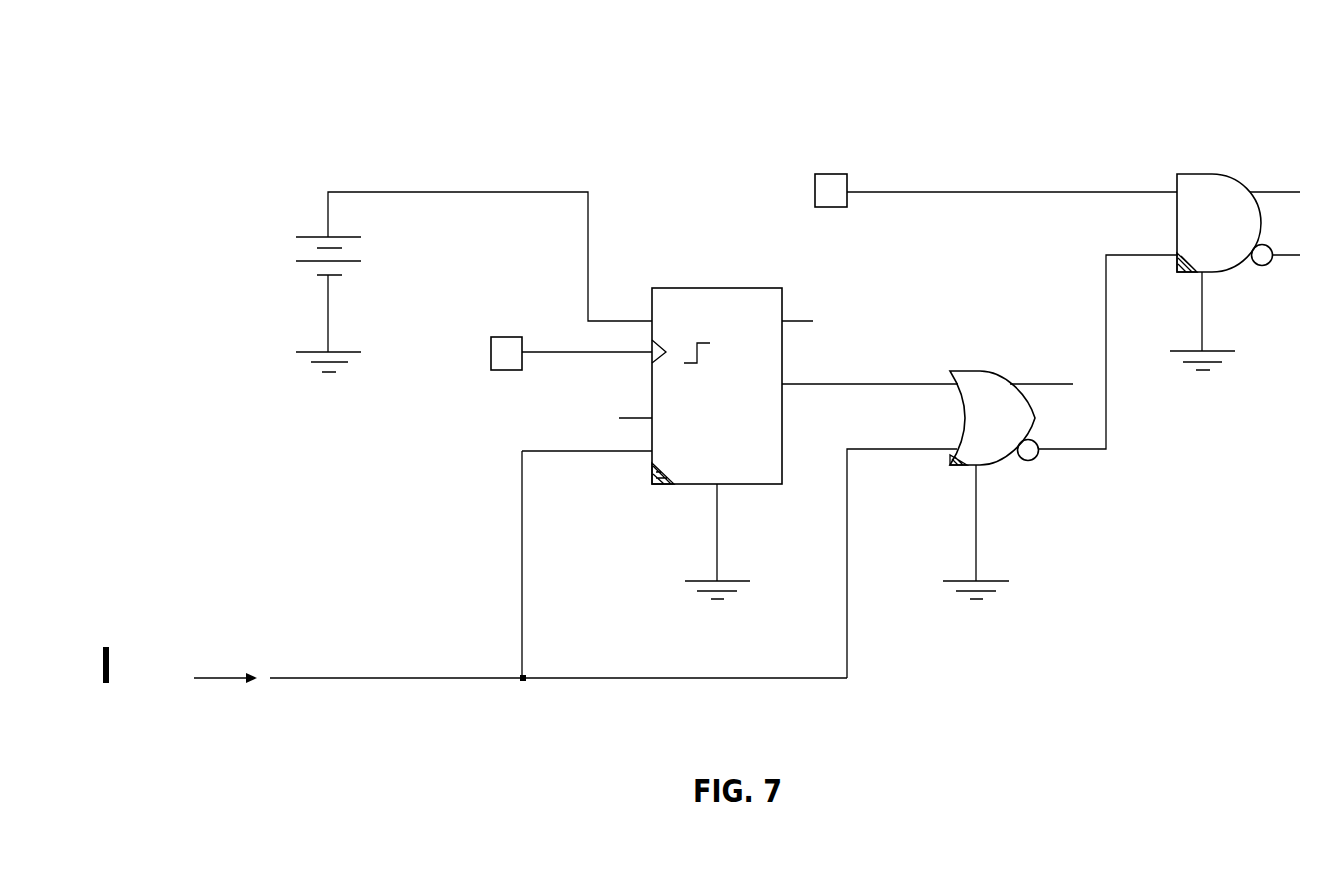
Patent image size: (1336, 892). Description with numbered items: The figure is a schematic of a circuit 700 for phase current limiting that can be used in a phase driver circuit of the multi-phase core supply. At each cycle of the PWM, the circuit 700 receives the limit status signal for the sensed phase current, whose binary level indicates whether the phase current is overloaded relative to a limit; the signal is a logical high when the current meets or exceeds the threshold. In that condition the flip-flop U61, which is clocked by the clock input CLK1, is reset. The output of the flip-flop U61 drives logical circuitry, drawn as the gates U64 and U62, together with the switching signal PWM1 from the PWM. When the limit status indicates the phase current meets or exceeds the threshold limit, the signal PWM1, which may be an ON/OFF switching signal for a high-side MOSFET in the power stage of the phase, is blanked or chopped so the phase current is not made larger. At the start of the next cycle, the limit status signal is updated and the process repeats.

The phase current limiting circuit 700 is at (276, 107).
The flip-flop U61 is at (846, 426).
The NAND gate U62 is at (1235, 255).
The NOR gate U64 is at (1060, 427).
The clock input CLK1 is at (530, 355).
The PWM switching signal PWM1 is at (947, 192).